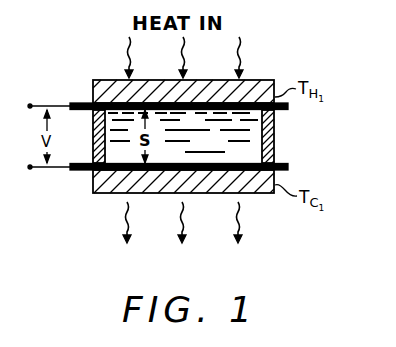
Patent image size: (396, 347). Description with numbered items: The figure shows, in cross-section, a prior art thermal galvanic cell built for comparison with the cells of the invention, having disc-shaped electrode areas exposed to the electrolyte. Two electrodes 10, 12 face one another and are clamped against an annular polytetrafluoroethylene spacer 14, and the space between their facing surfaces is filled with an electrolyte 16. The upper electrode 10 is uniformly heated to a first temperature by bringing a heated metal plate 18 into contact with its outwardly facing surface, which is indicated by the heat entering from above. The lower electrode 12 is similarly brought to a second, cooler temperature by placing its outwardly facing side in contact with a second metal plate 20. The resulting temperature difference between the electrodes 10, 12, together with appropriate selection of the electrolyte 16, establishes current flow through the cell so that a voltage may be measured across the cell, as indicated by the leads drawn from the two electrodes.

The electrode 10 is at (288, 106).
The electrode 12 is at (288, 169).
The annular polytetrafluoroethylene spacer 14 is at (274, 146).
The electrolyte 16 is at (100, 148).
The heated metal plate 18 is at (257, 80).
The second metal plate 20 is at (108, 193).